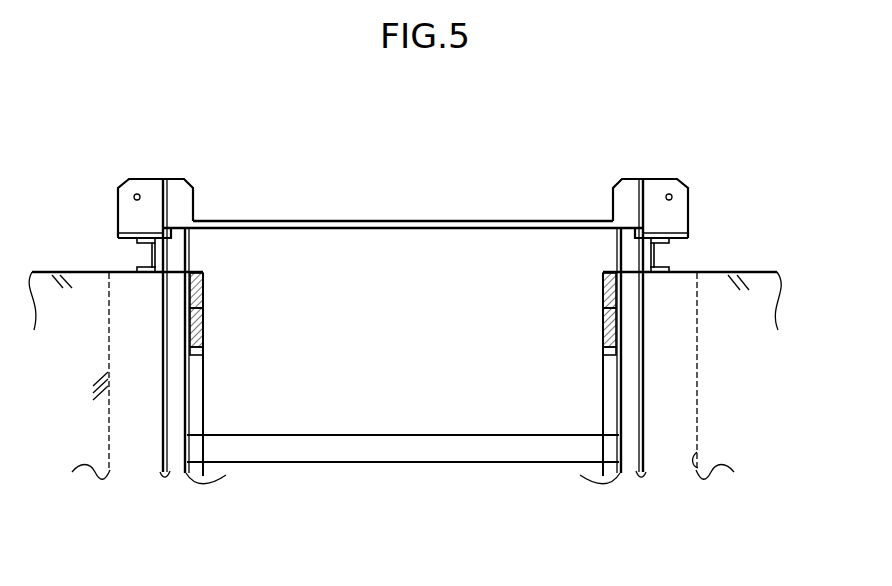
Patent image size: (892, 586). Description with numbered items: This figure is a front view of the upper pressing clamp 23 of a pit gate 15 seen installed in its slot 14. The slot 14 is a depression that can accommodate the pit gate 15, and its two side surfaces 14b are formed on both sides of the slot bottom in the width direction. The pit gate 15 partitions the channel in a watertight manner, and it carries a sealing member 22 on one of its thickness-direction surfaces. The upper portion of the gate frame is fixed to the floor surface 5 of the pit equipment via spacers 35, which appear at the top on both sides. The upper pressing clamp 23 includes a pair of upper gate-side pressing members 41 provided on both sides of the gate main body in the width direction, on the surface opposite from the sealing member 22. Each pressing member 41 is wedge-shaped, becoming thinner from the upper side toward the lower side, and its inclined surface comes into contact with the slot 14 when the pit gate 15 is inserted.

The floor surface 5 is at (716, 272).
The slot 14 is at (667, 456).
The side surface 14b is at (107, 356).
The pit gate 15 is at (401, 215).
The sealing member 22 is at (180, 466).
The upper pressing clamp 23 is at (212, 290).
The spacer 35 is at (150, 258).
The upper gate-side pressing member 41 is at (205, 322).